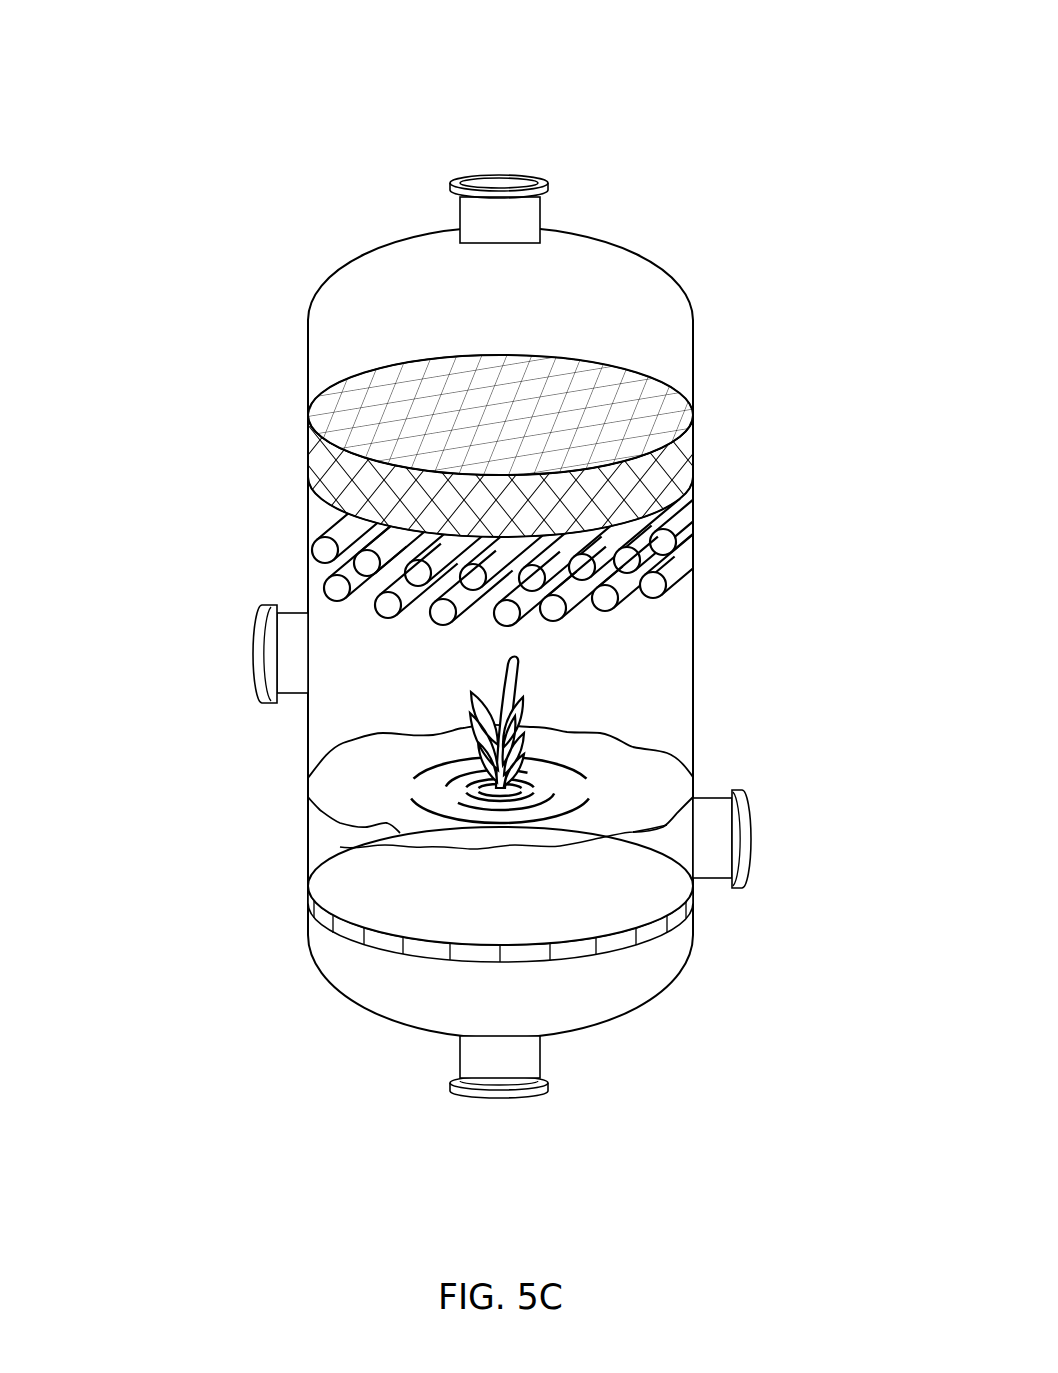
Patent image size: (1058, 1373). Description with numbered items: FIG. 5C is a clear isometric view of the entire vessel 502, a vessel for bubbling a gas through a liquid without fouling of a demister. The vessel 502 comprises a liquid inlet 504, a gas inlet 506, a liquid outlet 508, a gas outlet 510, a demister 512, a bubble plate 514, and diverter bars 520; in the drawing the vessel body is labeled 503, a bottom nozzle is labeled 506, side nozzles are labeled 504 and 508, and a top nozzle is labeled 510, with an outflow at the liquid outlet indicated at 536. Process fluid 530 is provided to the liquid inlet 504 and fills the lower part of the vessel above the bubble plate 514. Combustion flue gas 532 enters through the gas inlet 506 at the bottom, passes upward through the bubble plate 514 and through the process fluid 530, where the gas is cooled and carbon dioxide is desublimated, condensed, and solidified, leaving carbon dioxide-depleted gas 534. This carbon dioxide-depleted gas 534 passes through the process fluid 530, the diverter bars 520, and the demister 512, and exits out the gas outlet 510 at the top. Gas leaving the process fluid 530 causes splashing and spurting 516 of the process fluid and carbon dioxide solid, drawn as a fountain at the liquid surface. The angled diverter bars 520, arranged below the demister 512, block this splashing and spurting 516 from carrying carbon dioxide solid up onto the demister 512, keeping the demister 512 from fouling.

The vessel 502 is at (132, 50).
The vessel 503 is at (352, 262).
The liquid inlet 504 is at (287, 698).
The gas inlet 506 is at (540, 1053).
The liquid outlet 508 is at (714, 880).
The gas outlet 510 is at (540, 214).
The demister 512 is at (308, 458).
The bubble plate 514 is at (308, 896).
The splashing and spurting 516 is at (522, 663).
The diverter bars 520 is at (683, 518).
The process fluid 530 is at (225, 652).
The combustion flue gas 532 is at (498, 1123).
The carbon dioxide-depleted gas 534 is at (499, 167).
The liquid outlet flow 536 is at (763, 833).